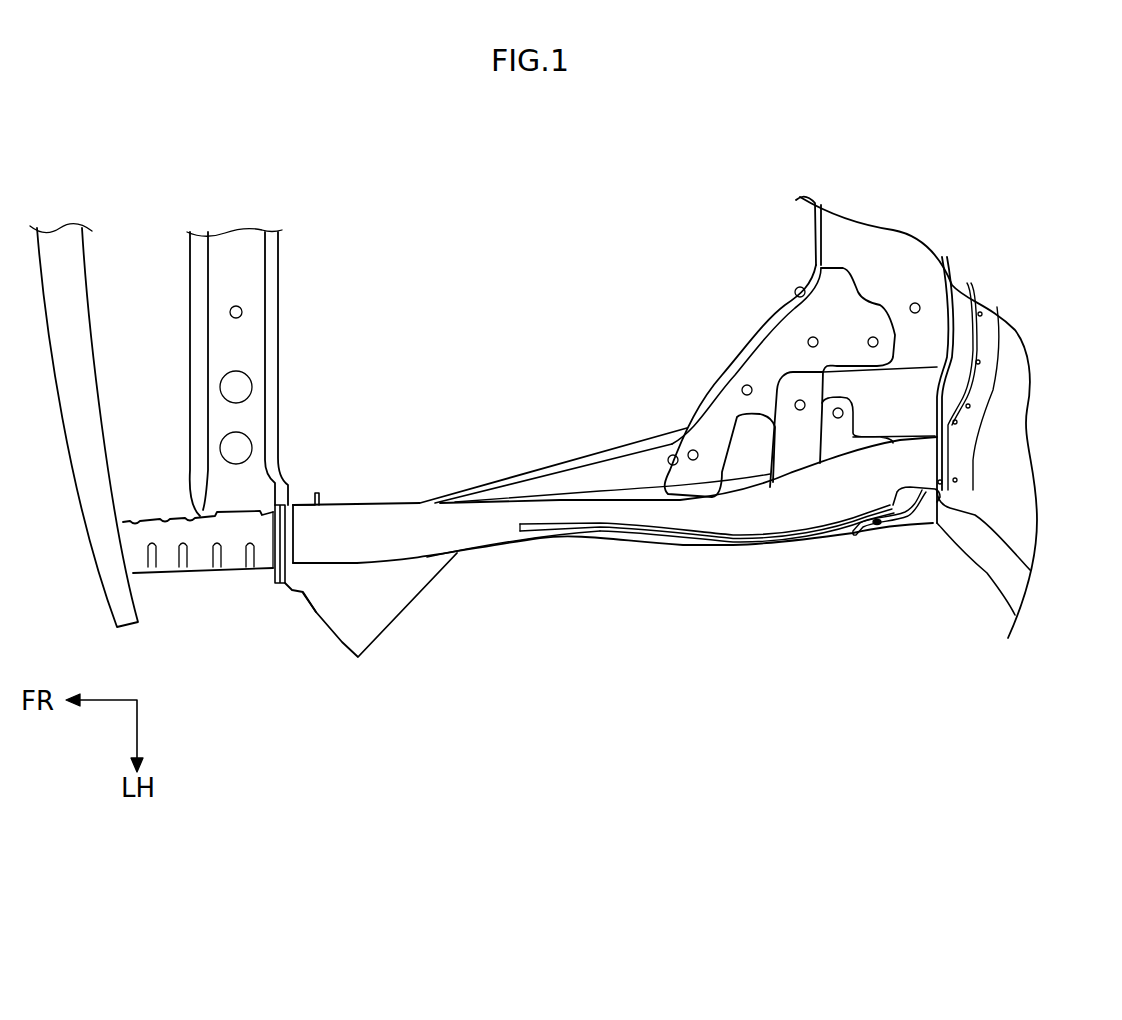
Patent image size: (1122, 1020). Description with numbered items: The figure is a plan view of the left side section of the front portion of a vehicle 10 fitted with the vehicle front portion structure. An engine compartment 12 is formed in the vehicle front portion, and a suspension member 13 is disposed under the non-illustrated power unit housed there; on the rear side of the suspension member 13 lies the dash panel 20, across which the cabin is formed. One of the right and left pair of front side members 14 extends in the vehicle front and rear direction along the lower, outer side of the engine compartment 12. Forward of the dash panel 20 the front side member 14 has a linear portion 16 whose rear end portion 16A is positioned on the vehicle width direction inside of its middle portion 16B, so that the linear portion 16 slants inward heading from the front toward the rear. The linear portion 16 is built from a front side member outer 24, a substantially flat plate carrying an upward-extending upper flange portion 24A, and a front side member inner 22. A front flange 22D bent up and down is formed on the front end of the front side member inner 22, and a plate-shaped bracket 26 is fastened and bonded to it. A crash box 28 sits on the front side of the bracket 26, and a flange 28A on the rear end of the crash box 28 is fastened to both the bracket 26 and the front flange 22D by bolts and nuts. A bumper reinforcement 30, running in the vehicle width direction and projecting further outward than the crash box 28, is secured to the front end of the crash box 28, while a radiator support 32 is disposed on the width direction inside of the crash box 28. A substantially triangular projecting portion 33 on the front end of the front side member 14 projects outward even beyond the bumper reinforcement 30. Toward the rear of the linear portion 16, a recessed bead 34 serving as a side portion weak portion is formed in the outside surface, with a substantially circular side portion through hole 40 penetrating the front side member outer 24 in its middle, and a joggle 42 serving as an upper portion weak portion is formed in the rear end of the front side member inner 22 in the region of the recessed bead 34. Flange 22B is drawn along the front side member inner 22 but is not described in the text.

The vehicle 10 is at (436, 253).
The engine compartment 12 is at (525, 337).
The suspension member 13 is at (807, 231).
The front side member 14 is at (582, 595).
The linear portion 16 is at (753, 550).
The rear end portion 16A is at (913, 530).
The middle portion 16B is at (600, 540).
The dash panel 20 is at (950, 440).
The front side member inner 22 is at (628, 499).
The cross member flange 22B is at (563, 523).
The front flange 22D is at (295, 540).
The front side member outer 24 is at (650, 548).
The upper flange portion 24A is at (695, 540).
The bracket 26 is at (279, 590).
The crash box 28 is at (177, 575).
The flange 28A is at (273, 572).
The bumper reinforcement 30 is at (88, 347).
The radiator support 32 is at (279, 370).
The projecting portion 33 is at (382, 633).
The recessed bead 34 is at (892, 527).
The side portion through hole 40 is at (860, 530).
The joggle 42 is at (947, 477).